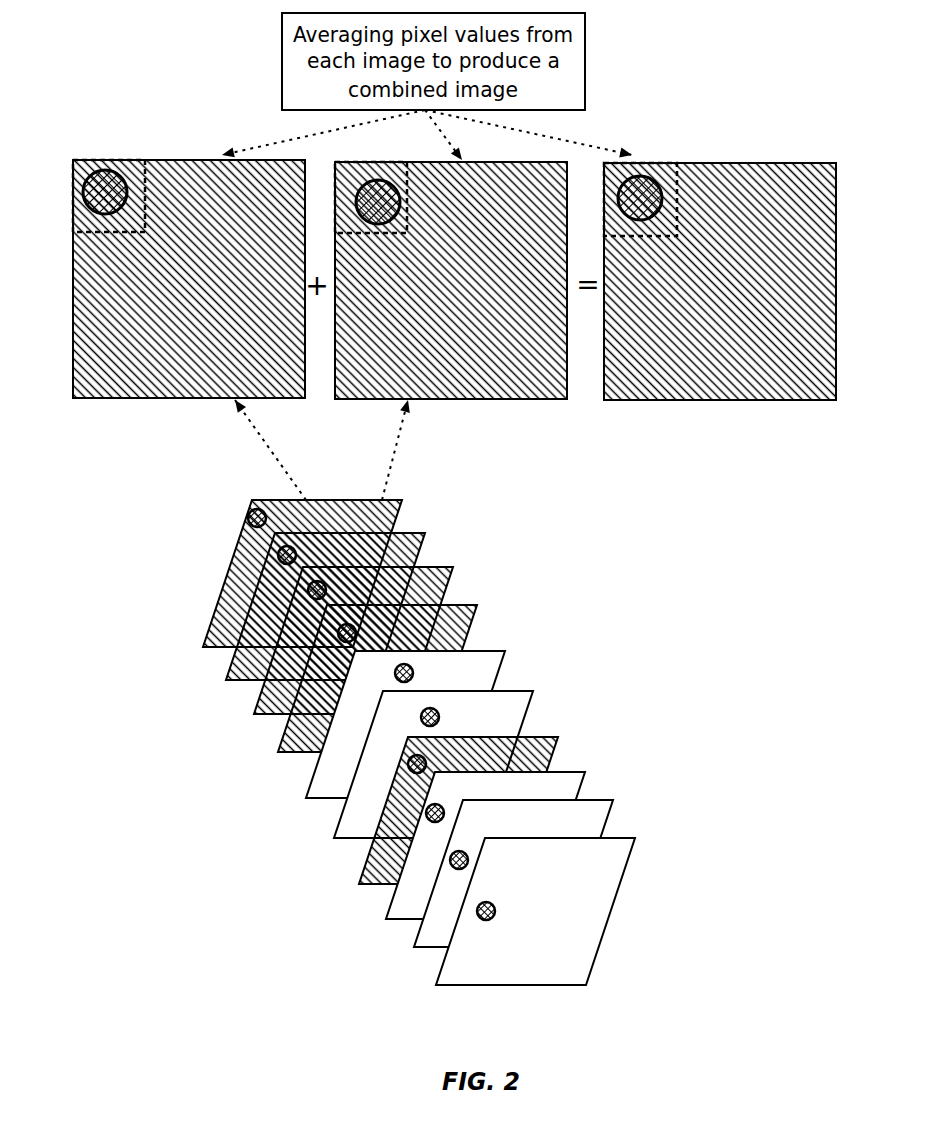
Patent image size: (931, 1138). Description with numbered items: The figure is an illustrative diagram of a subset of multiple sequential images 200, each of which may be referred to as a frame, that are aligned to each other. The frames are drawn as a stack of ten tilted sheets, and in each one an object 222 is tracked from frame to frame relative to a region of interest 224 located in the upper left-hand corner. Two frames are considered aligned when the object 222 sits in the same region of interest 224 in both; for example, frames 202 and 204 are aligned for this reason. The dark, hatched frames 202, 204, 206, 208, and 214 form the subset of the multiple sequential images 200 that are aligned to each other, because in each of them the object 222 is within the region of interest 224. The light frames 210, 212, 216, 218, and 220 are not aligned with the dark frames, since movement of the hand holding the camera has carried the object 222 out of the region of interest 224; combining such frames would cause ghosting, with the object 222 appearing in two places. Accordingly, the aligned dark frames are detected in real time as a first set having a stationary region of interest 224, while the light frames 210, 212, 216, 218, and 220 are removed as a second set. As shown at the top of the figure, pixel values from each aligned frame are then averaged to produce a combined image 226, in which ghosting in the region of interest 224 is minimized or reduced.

The multiple sequential images 200 is at (416, 717).
The dark frame 202 is at (410, 497).
The dark frame 204 is at (435, 532).
The dark frame 206 is at (465, 565).
The dark frame 208 is at (493, 598).
The light frame 210 is at (512, 640).
The light frame 212 is at (543, 687).
The dark frame 214 is at (570, 730).
The light frame 216 is at (595, 767).
The light frame 218 is at (628, 798).
The light frame 220 is at (648, 833).
The object 222 is at (122, 217).
The region of interest 224 is at (157, 212).
The combined image 226 is at (695, 437).